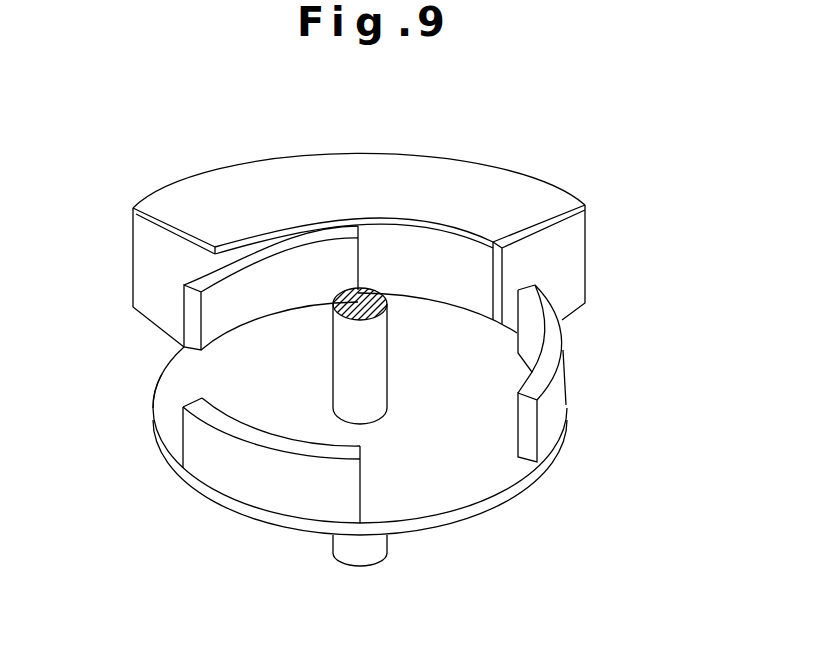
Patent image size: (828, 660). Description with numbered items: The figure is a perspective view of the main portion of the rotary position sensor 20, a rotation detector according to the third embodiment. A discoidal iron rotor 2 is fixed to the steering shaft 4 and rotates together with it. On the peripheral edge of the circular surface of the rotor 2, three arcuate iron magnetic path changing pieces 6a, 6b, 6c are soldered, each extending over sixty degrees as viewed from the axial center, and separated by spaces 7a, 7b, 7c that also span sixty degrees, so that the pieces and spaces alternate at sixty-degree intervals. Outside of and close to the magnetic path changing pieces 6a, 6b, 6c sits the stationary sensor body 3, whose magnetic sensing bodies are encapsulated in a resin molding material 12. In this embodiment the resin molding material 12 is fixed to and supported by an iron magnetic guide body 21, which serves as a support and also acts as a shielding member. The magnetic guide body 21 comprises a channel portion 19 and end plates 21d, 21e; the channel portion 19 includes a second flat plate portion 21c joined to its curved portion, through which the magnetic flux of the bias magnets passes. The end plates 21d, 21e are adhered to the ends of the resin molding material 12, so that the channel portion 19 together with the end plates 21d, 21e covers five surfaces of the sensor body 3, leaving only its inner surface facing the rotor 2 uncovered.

The rotor 2 is at (528, 482).
The sensor body 3 is at (410, 237).
The steering shaft 4 is at (362, 302).
The magnetic path changing piece 6a is at (199, 278).
The magnetic path changing piece 6b is at (554, 335).
The magnetic path changing piece 6c is at (234, 428).
The space 7a is at (445, 322).
The space 7b is at (453, 505).
The space 7c is at (166, 382).
The resin molding material 12 is at (477, 257).
The channel portion 19 is at (543, 193).
The rotary position sensor 20 is at (685, 207).
The magnetic guide body 21 is at (340, 163).
The second flat plate portion 21c is at (457, 171).
The end plate 21d is at (140, 240).
The end plate 21e is at (586, 249).